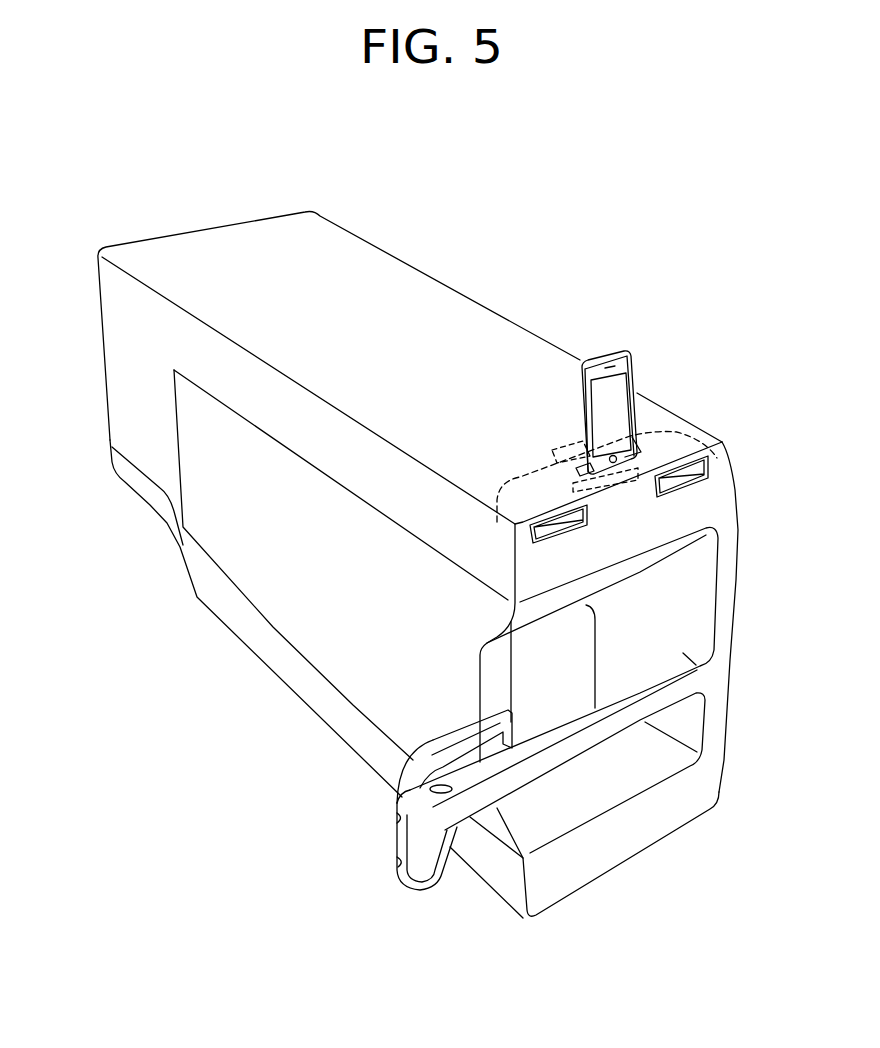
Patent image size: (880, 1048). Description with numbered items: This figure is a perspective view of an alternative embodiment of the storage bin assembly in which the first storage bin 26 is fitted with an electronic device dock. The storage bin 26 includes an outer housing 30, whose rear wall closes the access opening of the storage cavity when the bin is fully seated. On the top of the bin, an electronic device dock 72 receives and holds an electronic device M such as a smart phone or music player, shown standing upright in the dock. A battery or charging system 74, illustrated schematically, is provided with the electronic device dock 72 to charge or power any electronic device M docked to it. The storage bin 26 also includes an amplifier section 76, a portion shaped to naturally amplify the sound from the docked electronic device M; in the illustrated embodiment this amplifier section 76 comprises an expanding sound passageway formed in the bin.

The first storage bin 26 is at (227, 665).
The outer housing 30 is at (337, 453).
The electronic device dock 72 is at (630, 437).
The battery or charging system 74 is at (568, 445).
The amplifier section 76 is at (543, 460).
The electronic device M is at (632, 360).